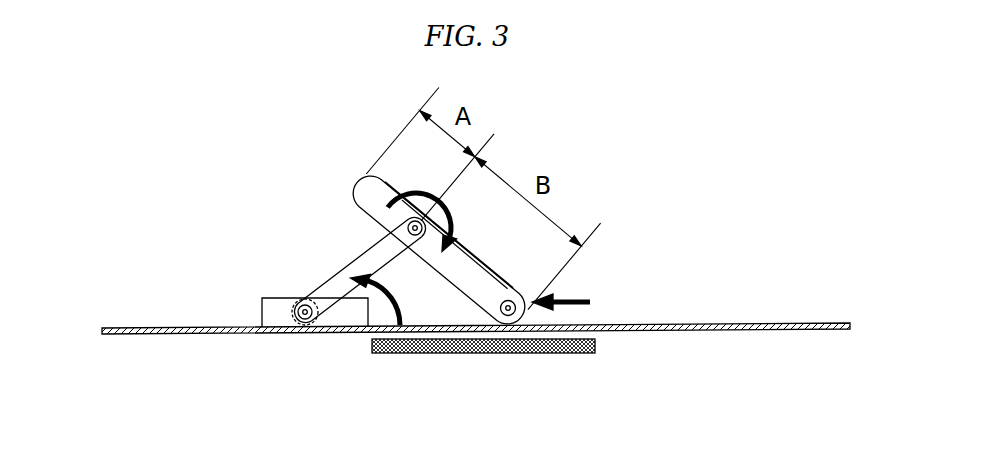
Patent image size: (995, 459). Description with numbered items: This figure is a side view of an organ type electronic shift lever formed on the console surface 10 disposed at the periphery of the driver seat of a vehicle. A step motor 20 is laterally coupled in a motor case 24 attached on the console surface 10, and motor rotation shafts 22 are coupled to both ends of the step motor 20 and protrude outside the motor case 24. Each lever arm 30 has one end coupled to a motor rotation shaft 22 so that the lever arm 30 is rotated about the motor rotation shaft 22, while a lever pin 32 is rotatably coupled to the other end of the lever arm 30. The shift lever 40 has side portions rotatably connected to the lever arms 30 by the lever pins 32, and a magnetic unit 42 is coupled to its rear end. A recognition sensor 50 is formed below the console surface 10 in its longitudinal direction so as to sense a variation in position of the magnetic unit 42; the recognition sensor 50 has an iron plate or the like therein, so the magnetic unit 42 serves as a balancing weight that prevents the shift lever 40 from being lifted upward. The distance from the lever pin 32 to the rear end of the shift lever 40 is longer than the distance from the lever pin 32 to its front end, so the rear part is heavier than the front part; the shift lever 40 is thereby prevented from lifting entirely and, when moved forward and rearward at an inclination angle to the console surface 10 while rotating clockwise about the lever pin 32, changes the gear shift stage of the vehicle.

The console surface 10 is at (742, 323).
The step motor 20 is at (291, 318).
The motor rotation shaft 22 is at (310, 322).
The motor case 24 is at (273, 305).
The lever arm 30 is at (345, 277).
The lever pin 32 is at (408, 226).
The shift lever 40 is at (463, 272).
The magnetic unit 42 is at (508, 308).
The recognition sensor 50 is at (585, 348).